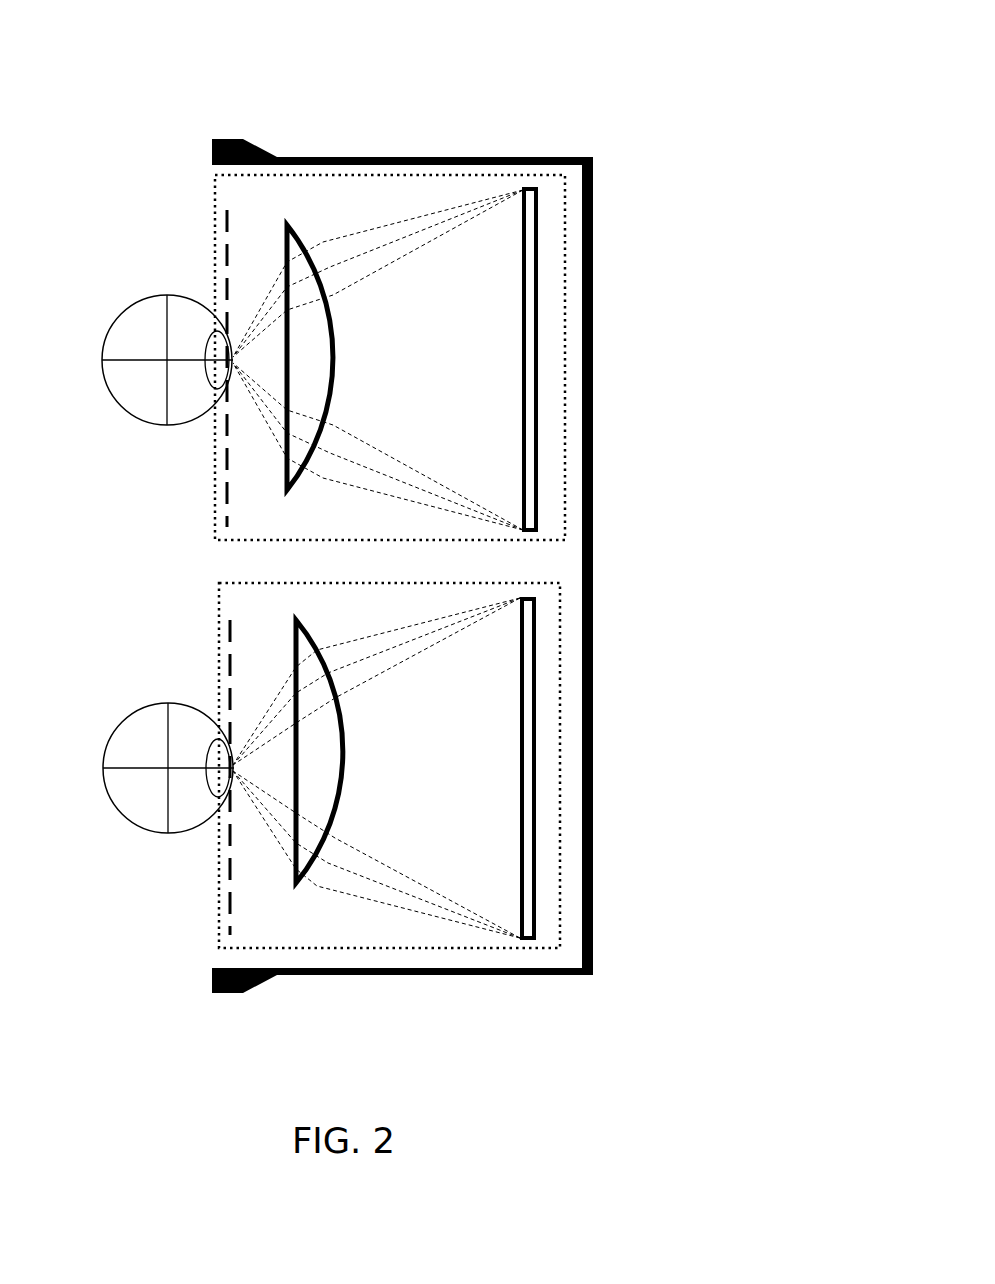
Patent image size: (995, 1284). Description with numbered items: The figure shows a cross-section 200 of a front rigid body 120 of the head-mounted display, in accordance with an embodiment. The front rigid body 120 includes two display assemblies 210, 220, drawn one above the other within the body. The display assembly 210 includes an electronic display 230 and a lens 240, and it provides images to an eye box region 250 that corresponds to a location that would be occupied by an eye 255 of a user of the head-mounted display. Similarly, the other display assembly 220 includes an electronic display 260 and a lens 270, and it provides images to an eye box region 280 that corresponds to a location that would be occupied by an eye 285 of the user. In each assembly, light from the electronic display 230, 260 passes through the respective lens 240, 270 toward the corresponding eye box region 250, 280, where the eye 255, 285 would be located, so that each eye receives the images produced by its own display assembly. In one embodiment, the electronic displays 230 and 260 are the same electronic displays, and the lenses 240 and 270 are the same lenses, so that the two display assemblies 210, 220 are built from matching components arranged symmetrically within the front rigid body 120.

The cross-section 200 is at (67, 33).
The front rigid body 120 is at (557, 155).
The display assembly 210 is at (442, 354).
The display assembly 220 is at (446, 781).
The electronic display 230 is at (540, 358).
The lens 240 is at (310, 355).
The eye box region 250 is at (225, 483).
The eye 255 is at (123, 305).
The electronic display 260 is at (540, 827).
The lens 270 is at (318, 760).
The eye box region 280 is at (222, 893).
The eye 285 is at (137, 713).